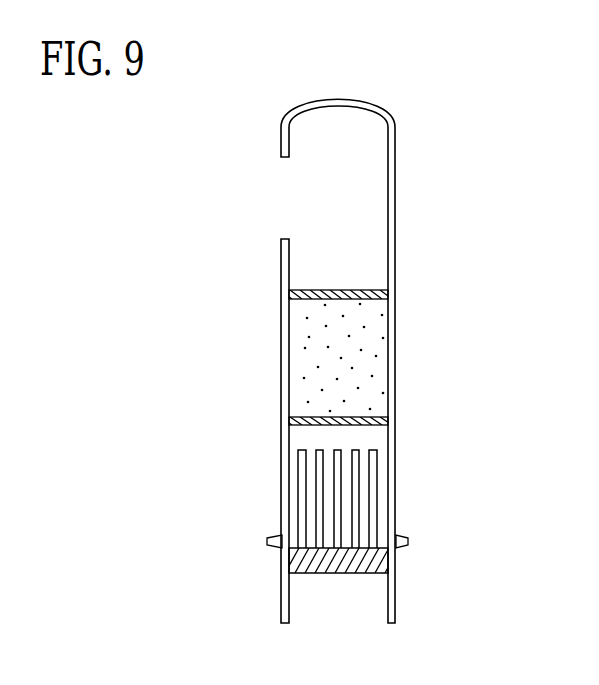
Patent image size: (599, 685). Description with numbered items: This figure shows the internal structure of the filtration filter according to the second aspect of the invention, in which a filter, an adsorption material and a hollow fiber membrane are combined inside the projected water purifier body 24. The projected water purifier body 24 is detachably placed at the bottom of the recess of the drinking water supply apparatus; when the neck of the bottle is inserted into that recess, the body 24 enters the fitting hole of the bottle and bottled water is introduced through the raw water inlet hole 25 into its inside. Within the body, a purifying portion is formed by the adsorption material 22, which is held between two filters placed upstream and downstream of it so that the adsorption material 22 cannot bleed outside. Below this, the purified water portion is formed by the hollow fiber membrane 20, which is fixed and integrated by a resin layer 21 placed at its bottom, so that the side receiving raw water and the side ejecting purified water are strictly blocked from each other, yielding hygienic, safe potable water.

The hollow fiber membrane 20 is at (359, 495).
The resin layer 21 is at (377, 563).
The adsorption material 22 is at (373, 352).
The projected water purifier body 24 is at (368, 104).
The raw water inlet hole 25 is at (285, 202).